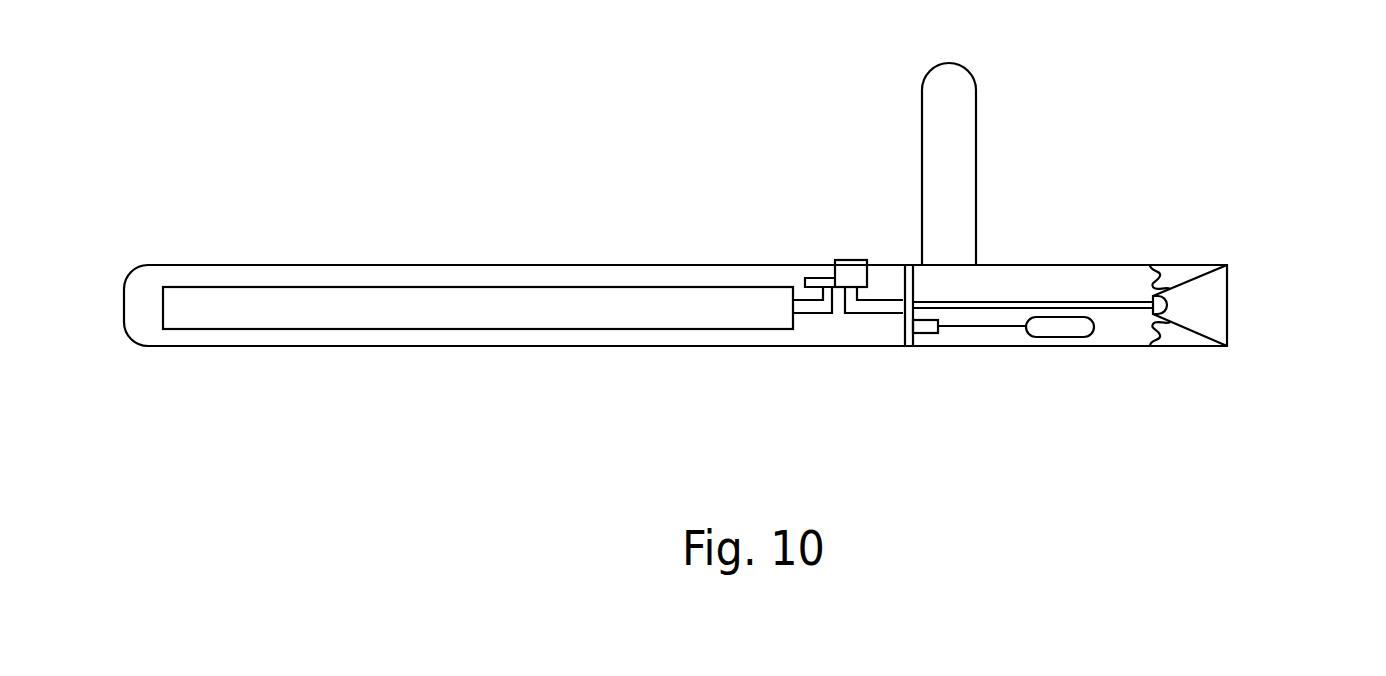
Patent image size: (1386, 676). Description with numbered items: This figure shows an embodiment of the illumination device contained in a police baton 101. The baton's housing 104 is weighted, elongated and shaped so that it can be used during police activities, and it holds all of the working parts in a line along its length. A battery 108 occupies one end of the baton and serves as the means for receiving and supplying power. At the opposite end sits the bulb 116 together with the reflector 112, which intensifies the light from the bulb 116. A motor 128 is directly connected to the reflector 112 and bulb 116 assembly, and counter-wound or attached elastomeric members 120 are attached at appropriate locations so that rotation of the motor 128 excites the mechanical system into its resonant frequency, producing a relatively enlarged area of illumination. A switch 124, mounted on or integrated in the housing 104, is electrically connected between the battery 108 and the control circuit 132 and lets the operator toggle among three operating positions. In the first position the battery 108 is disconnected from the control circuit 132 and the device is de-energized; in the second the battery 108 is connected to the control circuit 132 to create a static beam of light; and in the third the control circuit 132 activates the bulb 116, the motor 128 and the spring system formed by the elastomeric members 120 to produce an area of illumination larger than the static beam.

The police baton 101 is at (684, 146).
The housing 104 is at (705, 346).
The battery 108 is at (270, 318).
The reflector 112 is at (1198, 338).
The bulb 116 is at (1170, 300).
The elastomeric members 120 is at (1166, 272).
The switch 124 is at (845, 258).
The motor 128 is at (1060, 328).
The control circuit 132 is at (917, 346).